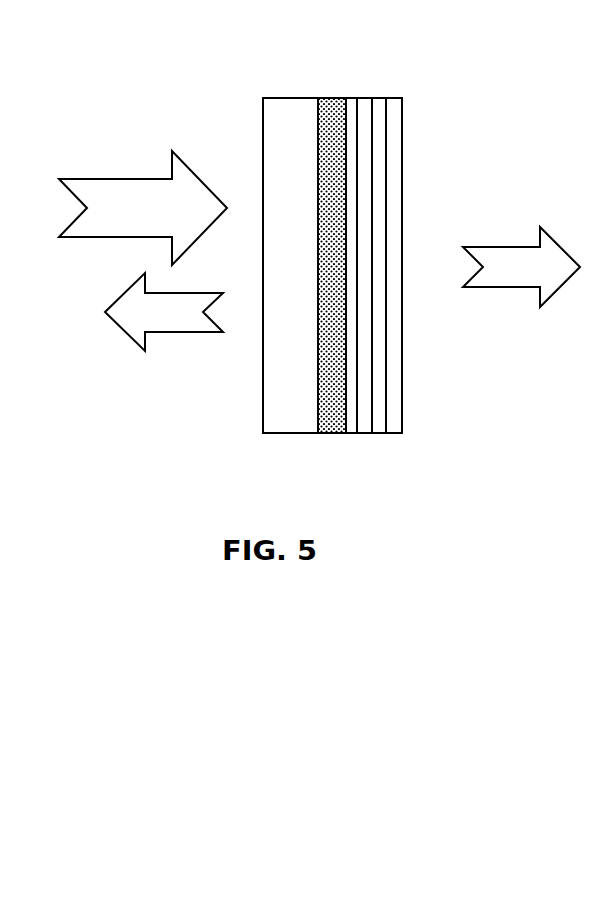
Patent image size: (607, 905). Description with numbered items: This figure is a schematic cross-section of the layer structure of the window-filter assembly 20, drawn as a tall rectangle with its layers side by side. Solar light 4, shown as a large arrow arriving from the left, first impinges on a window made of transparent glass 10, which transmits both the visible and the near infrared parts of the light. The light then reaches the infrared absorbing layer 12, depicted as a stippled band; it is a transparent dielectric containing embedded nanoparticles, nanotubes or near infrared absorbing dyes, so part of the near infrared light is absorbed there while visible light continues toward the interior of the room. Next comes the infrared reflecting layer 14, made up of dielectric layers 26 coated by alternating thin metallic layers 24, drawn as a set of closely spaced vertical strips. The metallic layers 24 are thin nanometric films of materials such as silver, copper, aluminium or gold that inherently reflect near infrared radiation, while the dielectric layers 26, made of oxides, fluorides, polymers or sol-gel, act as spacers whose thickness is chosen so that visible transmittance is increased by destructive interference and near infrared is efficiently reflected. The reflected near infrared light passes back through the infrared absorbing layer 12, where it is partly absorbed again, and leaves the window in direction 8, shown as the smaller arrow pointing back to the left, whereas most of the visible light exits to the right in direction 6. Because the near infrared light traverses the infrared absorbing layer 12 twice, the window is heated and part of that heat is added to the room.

The solar light 4 is at (120, 178).
The direction of transmitted visible light 6 is at (501, 247).
The direction of reflected near infrared light 8 is at (175, 333).
The transparent glass 10 is at (282, 108).
The infrared absorbing layer 12 is at (335, 428).
The infrared reflecting layer 14 is at (376, 99).
The window-filter assembly 20 is at (462, 115).
The metallic layers 24 is at (386, 435).
The dielectric layers 26 is at (378, 435).